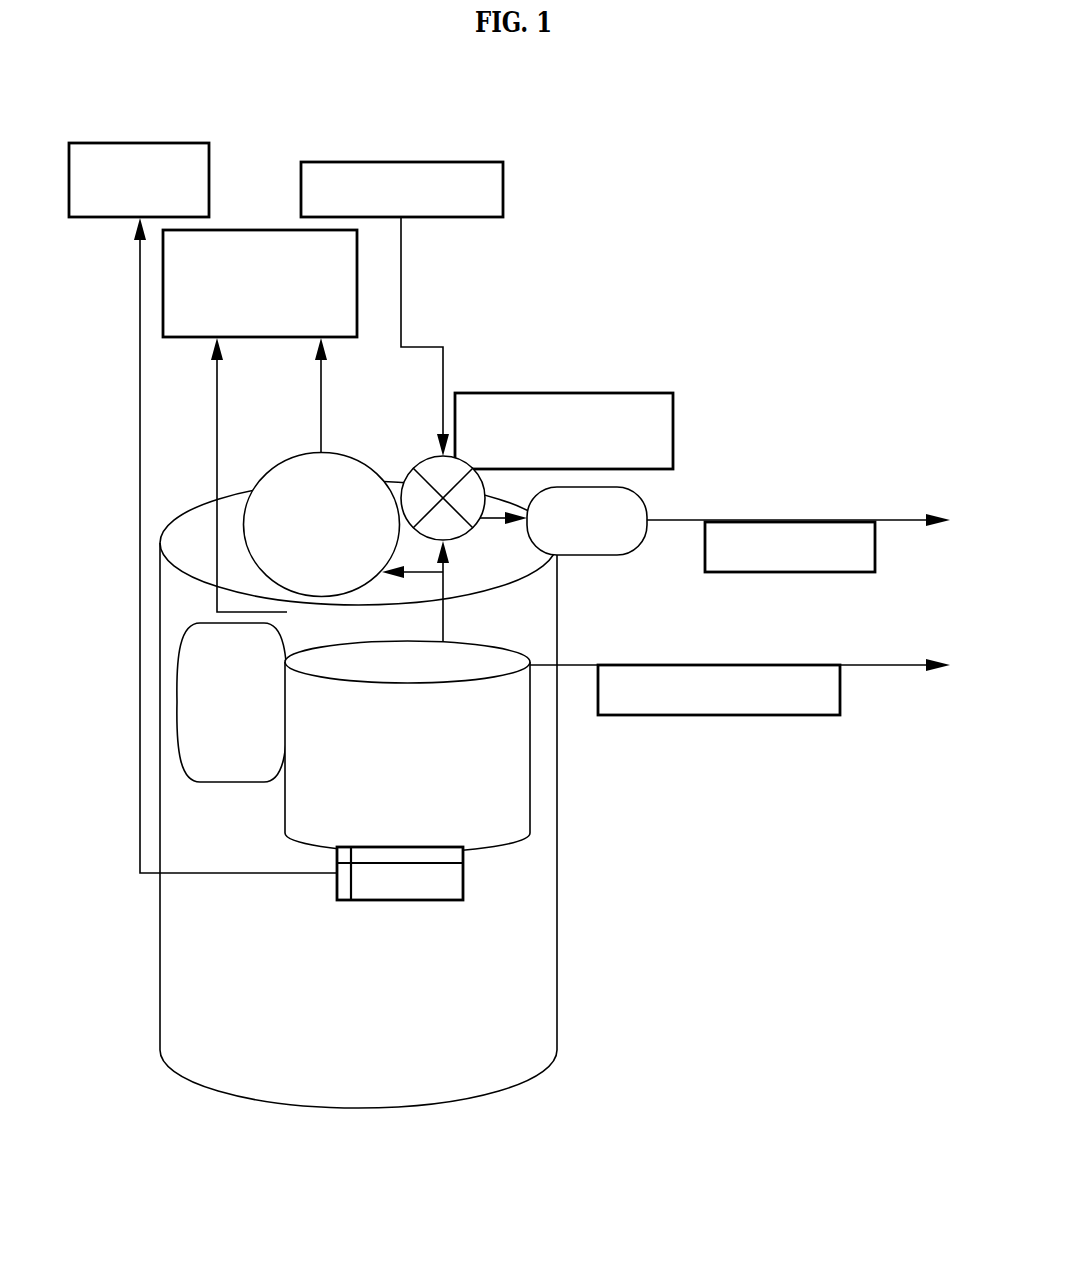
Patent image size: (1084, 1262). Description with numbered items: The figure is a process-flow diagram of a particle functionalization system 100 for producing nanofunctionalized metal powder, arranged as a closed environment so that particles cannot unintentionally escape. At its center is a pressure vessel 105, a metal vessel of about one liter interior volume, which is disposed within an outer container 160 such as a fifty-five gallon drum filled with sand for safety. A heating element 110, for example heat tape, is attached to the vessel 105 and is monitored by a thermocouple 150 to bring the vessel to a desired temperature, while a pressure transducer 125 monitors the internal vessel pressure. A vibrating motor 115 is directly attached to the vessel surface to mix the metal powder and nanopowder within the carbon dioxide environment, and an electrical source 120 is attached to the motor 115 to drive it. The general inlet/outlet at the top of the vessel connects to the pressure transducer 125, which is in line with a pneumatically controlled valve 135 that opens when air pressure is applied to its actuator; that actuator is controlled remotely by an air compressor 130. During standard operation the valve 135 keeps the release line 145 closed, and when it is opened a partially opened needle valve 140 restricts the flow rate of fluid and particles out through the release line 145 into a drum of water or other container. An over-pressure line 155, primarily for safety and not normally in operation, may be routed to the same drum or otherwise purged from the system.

The particle functionalization system 100 is at (806, 246).
The pressure vessel 105 is at (427, 817).
The heating element 110 is at (180, 700).
The vibrating motor 115 is at (413, 900).
The electrical source 120 is at (113, 219).
The pressure transducer 125 is at (360, 468).
The air compressor 130 is at (503, 192).
The pneumatically controlled valve 135 is at (573, 392).
The needle valve 140 is at (630, 554).
The release line 145 is at (837, 518).
The thermocouple 150 is at (272, 338).
The over-pressure line 155 is at (877, 663).
The outer container 160 is at (558, 995).